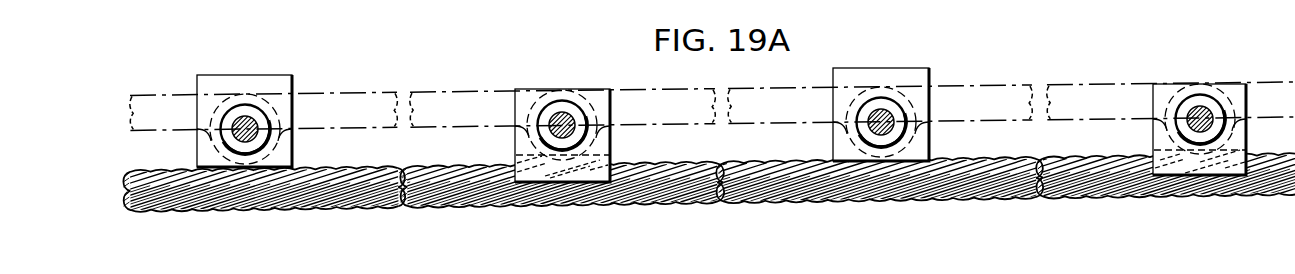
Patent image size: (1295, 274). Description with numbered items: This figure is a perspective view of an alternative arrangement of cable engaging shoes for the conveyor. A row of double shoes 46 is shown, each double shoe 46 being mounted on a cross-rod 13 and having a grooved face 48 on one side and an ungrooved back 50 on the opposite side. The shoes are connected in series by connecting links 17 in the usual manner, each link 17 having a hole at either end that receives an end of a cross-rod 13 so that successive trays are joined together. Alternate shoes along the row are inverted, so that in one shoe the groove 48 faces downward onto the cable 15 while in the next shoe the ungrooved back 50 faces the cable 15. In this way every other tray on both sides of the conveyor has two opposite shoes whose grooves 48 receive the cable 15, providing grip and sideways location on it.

The cross-rod 13 is at (233, 132).
The cable 15 is at (792, 196).
The connecting link 17 is at (458, 98).
The double shoe 46 is at (301, 69).
The grooved face 48 is at (233, 80).
The ungrooved back 50 is at (267, 170).